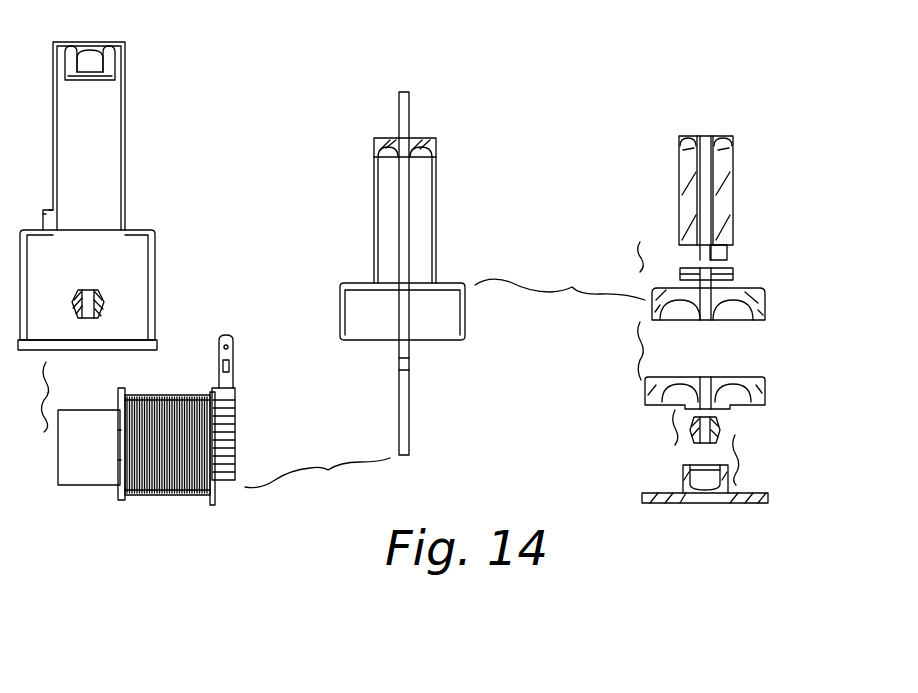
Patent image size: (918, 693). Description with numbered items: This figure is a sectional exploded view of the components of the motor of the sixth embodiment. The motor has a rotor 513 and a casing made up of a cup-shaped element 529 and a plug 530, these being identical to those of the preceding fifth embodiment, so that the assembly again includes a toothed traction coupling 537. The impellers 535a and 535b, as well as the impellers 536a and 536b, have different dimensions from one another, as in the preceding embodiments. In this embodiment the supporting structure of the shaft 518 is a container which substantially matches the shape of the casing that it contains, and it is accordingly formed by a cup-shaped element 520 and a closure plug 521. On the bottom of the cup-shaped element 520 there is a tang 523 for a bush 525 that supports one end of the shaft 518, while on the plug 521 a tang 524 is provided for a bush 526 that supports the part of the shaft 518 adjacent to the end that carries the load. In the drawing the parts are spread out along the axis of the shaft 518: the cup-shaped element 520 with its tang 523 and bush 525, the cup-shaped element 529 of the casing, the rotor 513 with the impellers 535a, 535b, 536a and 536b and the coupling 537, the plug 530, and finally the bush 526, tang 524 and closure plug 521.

The rotor 513 is at (669, 160).
The shaft 518 is at (408, 428).
The cup-shaped element 520 is at (148, 228).
The closure plug 521 is at (680, 504).
The tang 523 is at (112, 65).
The tang 524 is at (685, 478).
The bush 525 is at (103, 302).
The bush 526 is at (722, 426).
The cup-shaped element 529 is at (434, 224).
The plug 530 is at (650, 401).
The impeller 535a is at (693, 135).
The impeller 535b is at (662, 322).
The impeller 536a is at (430, 143).
The impeller 536b is at (728, 383).
The toothed traction coupling 537 is at (745, 230).